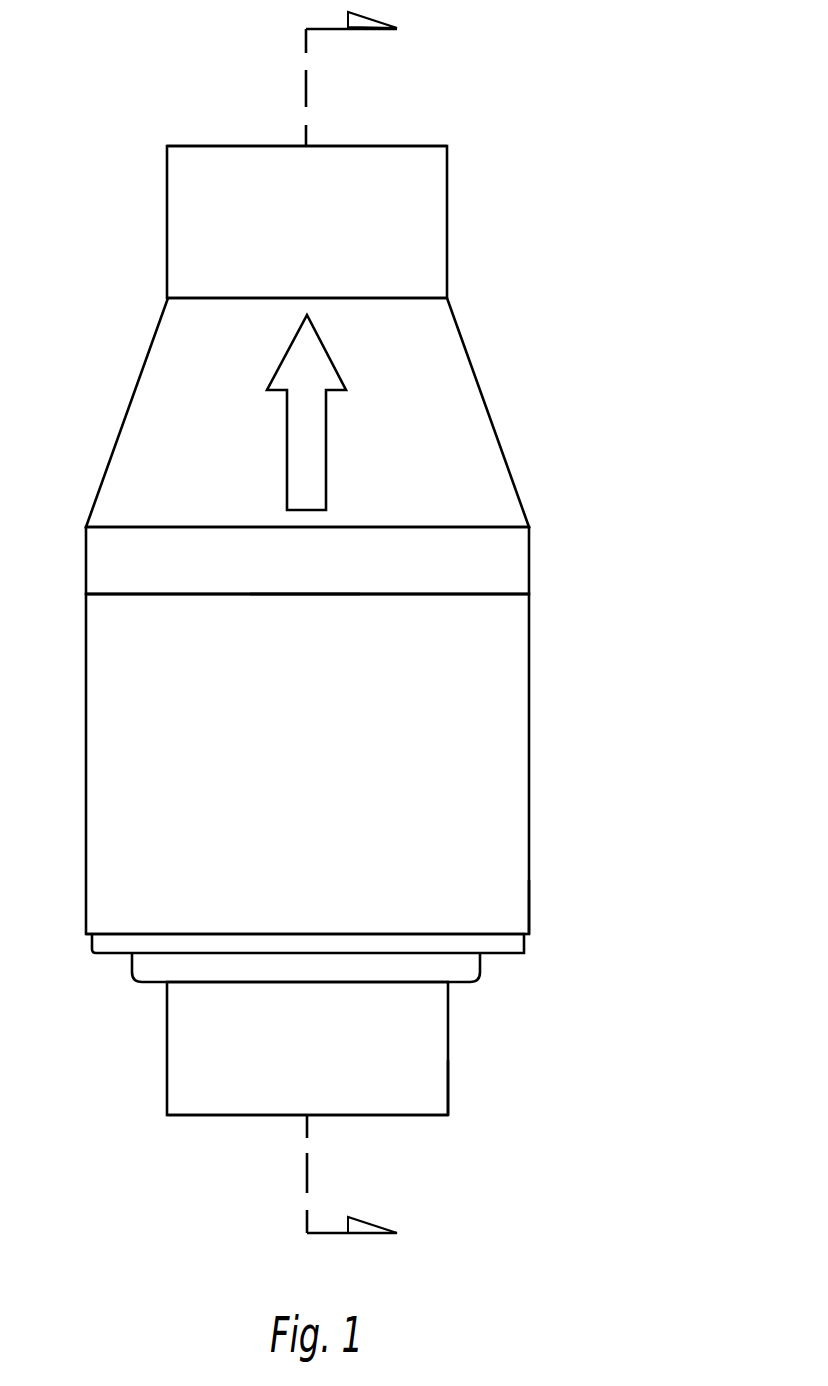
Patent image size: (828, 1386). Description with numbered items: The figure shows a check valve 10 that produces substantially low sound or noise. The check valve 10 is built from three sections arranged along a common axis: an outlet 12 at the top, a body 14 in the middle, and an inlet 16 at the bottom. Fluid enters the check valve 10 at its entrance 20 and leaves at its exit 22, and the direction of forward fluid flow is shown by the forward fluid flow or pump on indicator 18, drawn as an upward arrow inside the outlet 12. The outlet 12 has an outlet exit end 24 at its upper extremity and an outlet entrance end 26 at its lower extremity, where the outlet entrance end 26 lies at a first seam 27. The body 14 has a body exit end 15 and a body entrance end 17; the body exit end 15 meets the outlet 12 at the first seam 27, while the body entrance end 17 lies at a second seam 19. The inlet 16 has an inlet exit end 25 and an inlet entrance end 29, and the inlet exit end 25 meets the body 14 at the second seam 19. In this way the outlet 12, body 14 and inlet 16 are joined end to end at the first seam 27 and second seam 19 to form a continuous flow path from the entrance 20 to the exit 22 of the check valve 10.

The check valve 10 is at (642, 222).
The outlet 12 is at (512, 440).
The body 14 is at (545, 736).
The body exit end 15 is at (530, 613).
The inlet 16 is at (464, 1026).
The body entrance end 17 is at (530, 921).
The forward fluid flow or pump on indicator 18 is at (326, 429).
The second seam 19 is at (310, 933).
The entrance 20 is at (378, 1118).
The exit 22 is at (380, 145).
The outlet exit end 24 is at (448, 153).
The inlet exit end 25 is at (526, 949).
The outlet entrance end 26 is at (530, 568).
The first seam 27 is at (308, 597).
The inlet entrance end 29 is at (449, 1108).